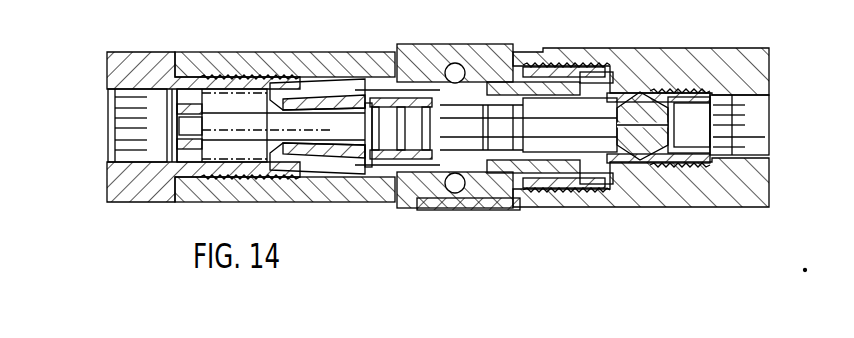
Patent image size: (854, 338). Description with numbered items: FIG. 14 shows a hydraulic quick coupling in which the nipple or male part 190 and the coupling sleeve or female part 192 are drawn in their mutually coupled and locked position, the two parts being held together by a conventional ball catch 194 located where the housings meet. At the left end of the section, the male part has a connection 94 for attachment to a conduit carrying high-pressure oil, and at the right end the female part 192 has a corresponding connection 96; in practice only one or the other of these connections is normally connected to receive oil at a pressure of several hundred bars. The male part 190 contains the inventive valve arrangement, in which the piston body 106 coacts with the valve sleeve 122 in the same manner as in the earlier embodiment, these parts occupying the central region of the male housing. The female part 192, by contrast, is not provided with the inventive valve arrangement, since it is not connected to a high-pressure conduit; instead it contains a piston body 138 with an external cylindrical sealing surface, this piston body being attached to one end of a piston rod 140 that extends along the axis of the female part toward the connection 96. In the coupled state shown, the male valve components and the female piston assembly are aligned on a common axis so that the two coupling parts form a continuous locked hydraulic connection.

The connection 94 is at (142, 161).
The connection 96 is at (739, 167).
The piston body 106 is at (412, 240).
The valve sleeve 122 is at (292, 156).
The piston body 138 is at (462, 240).
The piston rod 140 is at (575, 164).
The nipple or male part 190 is at (228, 53).
The coupling sleeve or female part 192 is at (647, 52).
The ball catch 194 is at (487, 43).